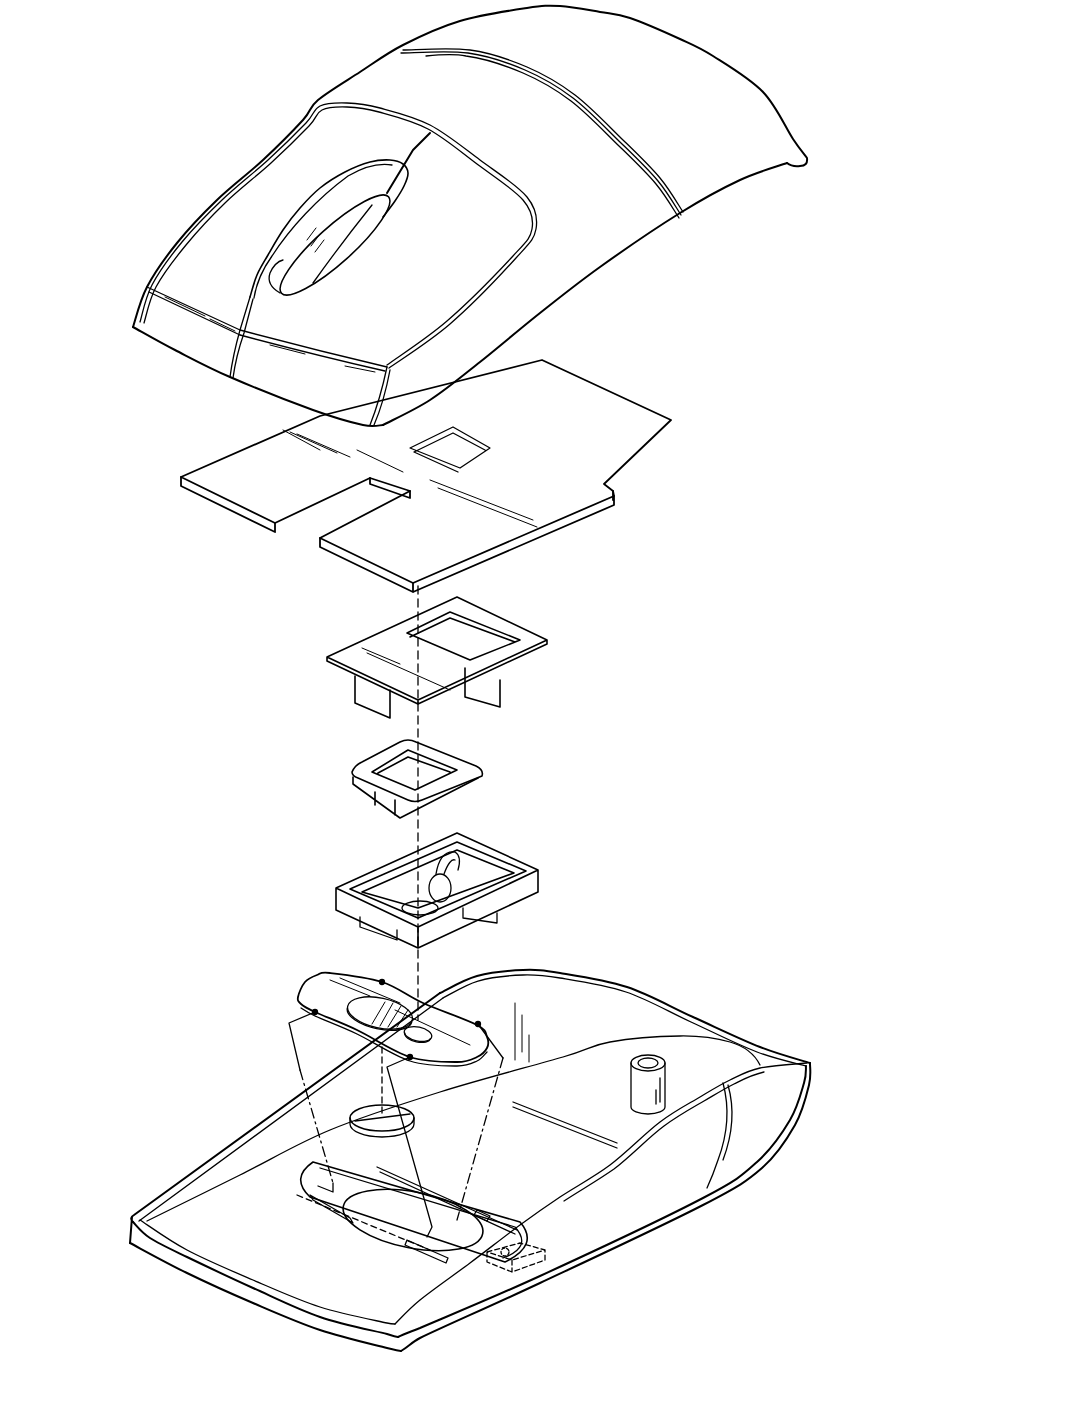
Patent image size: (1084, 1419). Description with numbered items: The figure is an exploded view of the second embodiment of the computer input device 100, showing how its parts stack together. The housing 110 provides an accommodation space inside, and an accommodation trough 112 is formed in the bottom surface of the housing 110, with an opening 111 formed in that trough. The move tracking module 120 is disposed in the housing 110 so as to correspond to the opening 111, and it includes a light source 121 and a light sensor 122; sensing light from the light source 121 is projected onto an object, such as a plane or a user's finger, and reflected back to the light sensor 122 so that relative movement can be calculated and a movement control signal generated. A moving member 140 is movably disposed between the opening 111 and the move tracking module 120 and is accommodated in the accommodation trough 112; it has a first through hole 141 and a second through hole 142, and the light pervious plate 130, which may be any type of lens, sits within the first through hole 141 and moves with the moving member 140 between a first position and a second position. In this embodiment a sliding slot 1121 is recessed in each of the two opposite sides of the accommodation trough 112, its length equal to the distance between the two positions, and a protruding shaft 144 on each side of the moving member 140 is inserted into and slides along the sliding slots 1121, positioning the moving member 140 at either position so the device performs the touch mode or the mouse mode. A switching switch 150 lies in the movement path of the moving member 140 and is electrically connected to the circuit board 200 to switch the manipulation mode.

The computer input device 100 is at (174, 105).
The housing 110 is at (768, 129).
The opening 111 is at (387, 1212).
The accommodation trough 112 is at (313, 1178).
The sliding slot 1121 is at (487, 1213).
The move tracking module 120 is at (327, 812).
The light source 121 is at (473, 883).
The light sensor 122 is at (467, 770).
The light pervious plate 130 is at (357, 1107).
The moving member 140 is at (313, 983).
The first through hole 141 is at (367, 1017).
The second through hole 142 is at (430, 1020).
The protruding shaft 144 is at (480, 1020).
The switching switch 150 is at (557, 1268).
The circuit board 200 is at (602, 416).